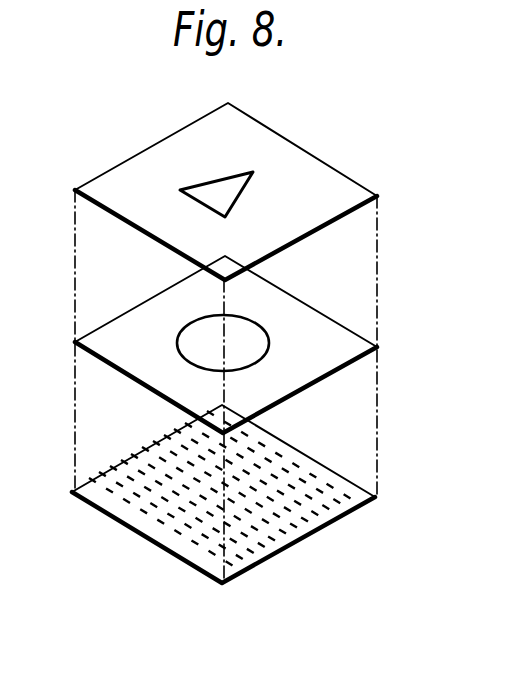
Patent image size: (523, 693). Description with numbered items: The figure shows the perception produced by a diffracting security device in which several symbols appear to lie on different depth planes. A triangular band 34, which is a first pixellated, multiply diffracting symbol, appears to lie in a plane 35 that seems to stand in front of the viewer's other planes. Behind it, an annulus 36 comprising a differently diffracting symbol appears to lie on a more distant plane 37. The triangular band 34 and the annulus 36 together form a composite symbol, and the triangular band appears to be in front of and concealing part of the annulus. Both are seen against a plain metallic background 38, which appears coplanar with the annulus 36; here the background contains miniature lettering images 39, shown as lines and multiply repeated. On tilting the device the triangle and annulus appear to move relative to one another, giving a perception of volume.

The triangular band 34 is at (253, 173).
The plane 35 is at (342, 172).
The annulus 36 is at (268, 331).
The more distant plane 37 is at (305, 391).
The plain metallic background 38 is at (320, 530).
The miniature lettering images 39 is at (243, 552).